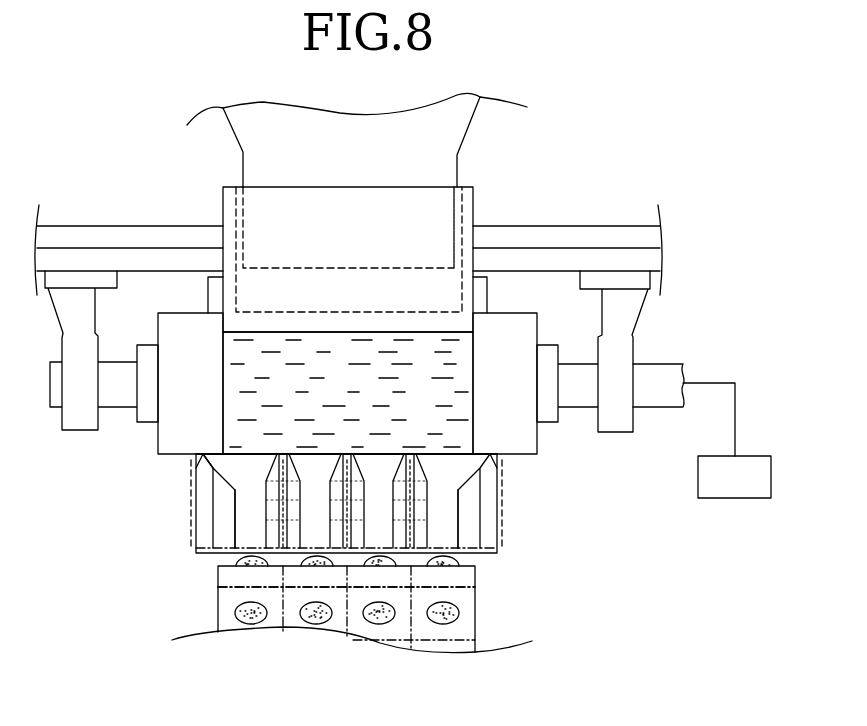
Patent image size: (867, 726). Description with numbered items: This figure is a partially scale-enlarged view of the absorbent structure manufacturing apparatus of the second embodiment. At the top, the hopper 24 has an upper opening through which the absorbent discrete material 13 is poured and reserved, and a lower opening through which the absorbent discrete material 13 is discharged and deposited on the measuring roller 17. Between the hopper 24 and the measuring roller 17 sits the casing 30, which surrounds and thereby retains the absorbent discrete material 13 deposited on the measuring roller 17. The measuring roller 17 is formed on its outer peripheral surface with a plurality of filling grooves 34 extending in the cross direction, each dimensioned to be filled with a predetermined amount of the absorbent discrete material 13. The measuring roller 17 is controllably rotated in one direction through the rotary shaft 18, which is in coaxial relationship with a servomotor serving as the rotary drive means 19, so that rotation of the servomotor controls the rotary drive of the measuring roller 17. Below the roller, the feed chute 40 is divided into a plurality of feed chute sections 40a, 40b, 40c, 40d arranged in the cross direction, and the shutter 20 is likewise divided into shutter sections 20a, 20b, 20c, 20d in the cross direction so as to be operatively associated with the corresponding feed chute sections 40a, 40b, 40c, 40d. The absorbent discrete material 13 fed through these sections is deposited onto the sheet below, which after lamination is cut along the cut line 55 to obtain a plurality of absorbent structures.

The absorbent discrete material 13 is at (247, 566).
The measuring roller 17 is at (505, 326).
The rotary shaft 18 is at (657, 372).
The rotary drive means 19 is at (753, 455).
The shutter 20 is at (622, 448).
The shutter section 20a is at (298, 461).
The shutter section 20b is at (320, 480).
The shutter section 20c is at (388, 491).
The shutter section 20d is at (448, 535).
The hopper 24 is at (430, 152).
The casing 30 is at (475, 205).
The filling grooves 34 is at (457, 398).
The feed chute 40 is at (97, 445).
The feed chute section 40a is at (247, 470).
The feed chute section 40b is at (315, 490).
The feed chute section 40c is at (382, 501).
The feed chute section 40d is at (442, 518).
The cut line 55 is at (460, 587).